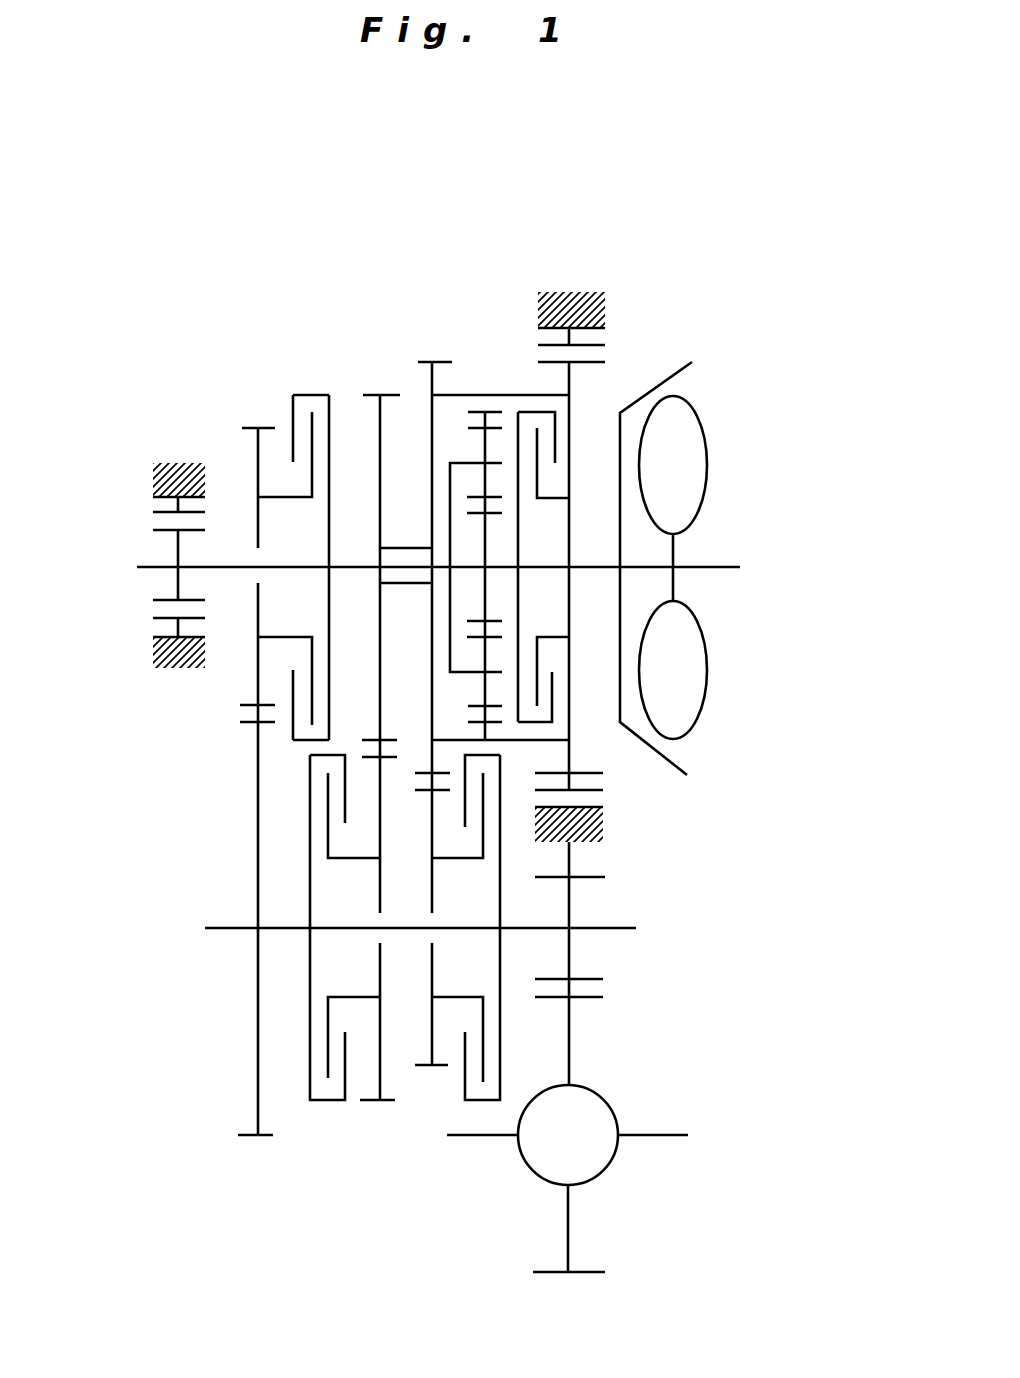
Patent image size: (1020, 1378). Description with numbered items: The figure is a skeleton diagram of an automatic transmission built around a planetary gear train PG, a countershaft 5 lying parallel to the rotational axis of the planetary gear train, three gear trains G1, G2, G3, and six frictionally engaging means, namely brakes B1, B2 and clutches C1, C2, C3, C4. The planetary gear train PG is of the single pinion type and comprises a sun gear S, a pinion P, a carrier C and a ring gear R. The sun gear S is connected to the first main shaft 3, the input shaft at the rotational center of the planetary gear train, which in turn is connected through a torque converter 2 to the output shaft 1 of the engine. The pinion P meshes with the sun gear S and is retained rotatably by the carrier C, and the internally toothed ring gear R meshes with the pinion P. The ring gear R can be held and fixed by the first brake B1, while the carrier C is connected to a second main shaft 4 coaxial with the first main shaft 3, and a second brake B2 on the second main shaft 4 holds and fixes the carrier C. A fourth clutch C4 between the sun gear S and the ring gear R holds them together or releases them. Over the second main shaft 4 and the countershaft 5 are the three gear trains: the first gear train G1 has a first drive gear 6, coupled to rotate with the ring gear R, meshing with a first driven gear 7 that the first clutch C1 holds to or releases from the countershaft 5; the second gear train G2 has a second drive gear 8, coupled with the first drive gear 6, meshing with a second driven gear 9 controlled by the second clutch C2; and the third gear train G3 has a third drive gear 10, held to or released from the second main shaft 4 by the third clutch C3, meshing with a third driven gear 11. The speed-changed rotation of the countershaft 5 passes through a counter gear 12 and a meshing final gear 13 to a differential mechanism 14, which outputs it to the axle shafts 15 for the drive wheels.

The output shaft of an engine 1 is at (723, 568).
The torque converter 2 is at (715, 400).
The first main shaft 3 is at (582, 570).
The second main shaft 4 is at (225, 567).
The countershaft 5 is at (210, 926).
The first drive gear 6 is at (432, 377).
The first driven gear 7 is at (428, 1037).
The second drive gear 8 is at (378, 423).
The second driven gear 9 is at (378, 1078).
The third drive gear 10 is at (258, 450).
The third driven gear 11 is at (252, 1100).
The counter gear 12 is at (580, 873).
The final gear 13 is at (589, 1276).
The differential mechanism 14 is at (609, 1086).
The axle shafts 15 is at (676, 1135).
The first gear train G1 is at (432, 326).
The second gear train G2 is at (375, 342).
The third gear train G3 is at (255, 332).
The planetary gear train PG is at (493, 312).
The ring gear R is at (495, 412).
The pinion P is at (485, 442).
The sun gear S is at (485, 540).
The carrier C is at (450, 615).
The first clutch C1 is at (502, 1082).
The second clutch C2 is at (343, 1072).
The third clutch C3 is at (293, 687).
The fourth clutch C4 is at (552, 447).
The first brake B1 is at (608, 343).
The second brake B2 is at (162, 512).